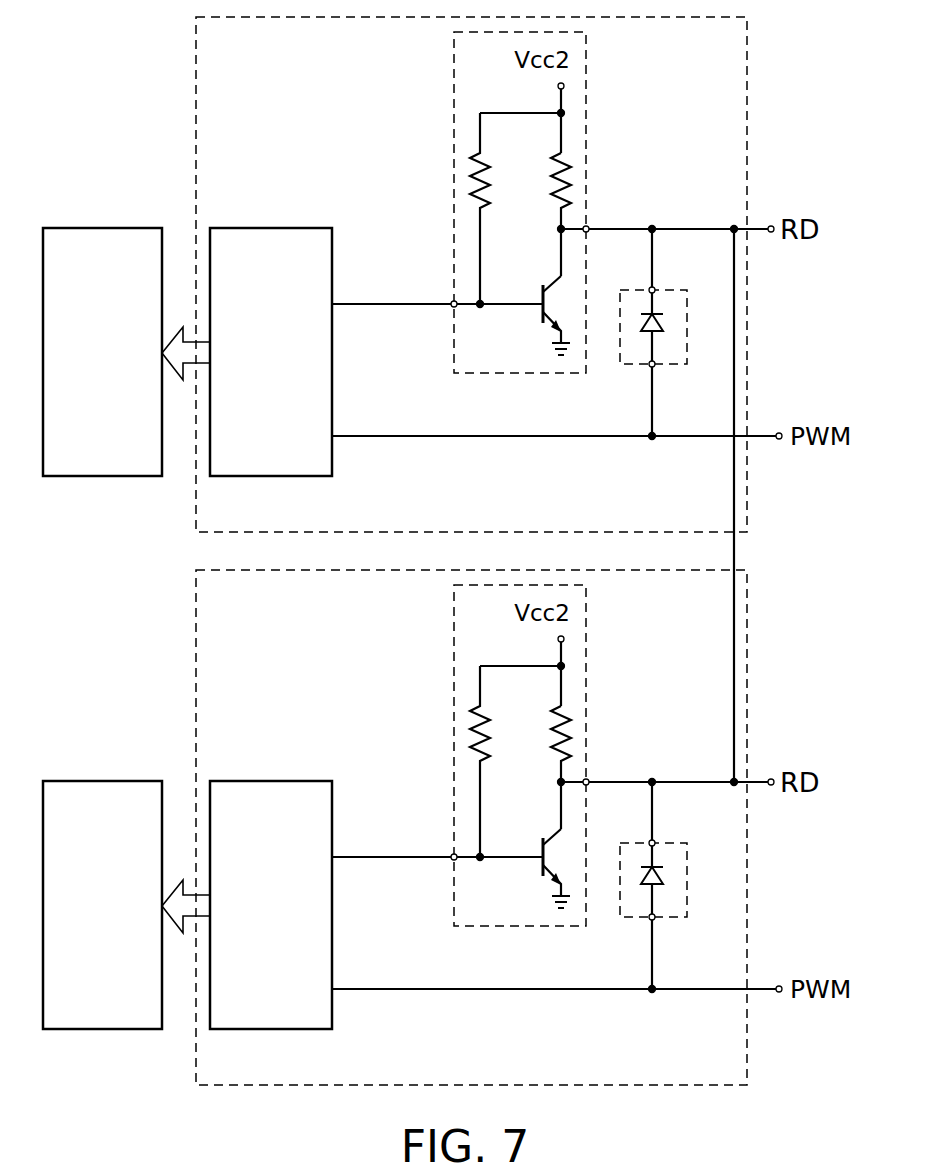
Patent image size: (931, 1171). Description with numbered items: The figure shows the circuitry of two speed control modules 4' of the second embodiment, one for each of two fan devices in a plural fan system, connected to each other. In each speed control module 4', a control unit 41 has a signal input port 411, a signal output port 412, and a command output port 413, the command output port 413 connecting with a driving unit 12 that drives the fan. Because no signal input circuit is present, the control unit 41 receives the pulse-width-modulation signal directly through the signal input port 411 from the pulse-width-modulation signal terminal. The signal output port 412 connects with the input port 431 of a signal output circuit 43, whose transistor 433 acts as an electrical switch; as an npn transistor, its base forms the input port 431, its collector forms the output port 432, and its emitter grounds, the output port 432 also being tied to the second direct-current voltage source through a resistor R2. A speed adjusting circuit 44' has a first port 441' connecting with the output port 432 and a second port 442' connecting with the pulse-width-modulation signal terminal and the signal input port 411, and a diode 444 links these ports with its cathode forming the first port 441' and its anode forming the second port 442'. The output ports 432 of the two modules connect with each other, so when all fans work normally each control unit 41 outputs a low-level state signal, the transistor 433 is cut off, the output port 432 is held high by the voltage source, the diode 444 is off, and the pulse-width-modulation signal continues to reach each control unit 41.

The speed control module 4' is at (437, 551).
The driving unit 12 is at (128, 227).
The control unit 41 is at (297, 232).
The signal input port 411 is at (332, 436).
The signal output port 412 is at (332, 305).
The command output port 413 is at (207, 343).
The signal output circuit 43 is at (587, 157).
The resistor R2 is at (567, 177).
The input port 431 is at (454, 301).
The output port 432 is at (586, 227).
The transistor 433 is at (543, 306).
The speed adjusting circuit 44' is at (712, 609).
The first port 441' is at (737, 568).
The second port 442' is at (613, 665).
The diode 444 is at (665, 323).